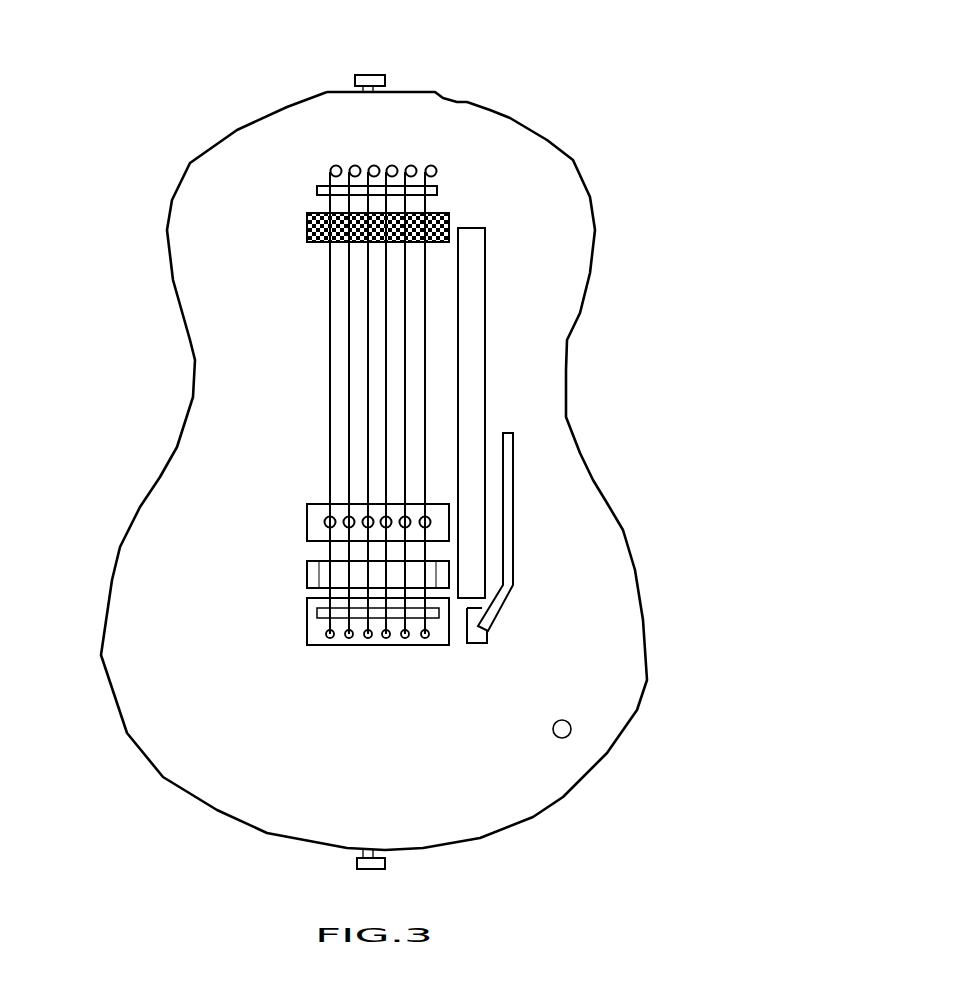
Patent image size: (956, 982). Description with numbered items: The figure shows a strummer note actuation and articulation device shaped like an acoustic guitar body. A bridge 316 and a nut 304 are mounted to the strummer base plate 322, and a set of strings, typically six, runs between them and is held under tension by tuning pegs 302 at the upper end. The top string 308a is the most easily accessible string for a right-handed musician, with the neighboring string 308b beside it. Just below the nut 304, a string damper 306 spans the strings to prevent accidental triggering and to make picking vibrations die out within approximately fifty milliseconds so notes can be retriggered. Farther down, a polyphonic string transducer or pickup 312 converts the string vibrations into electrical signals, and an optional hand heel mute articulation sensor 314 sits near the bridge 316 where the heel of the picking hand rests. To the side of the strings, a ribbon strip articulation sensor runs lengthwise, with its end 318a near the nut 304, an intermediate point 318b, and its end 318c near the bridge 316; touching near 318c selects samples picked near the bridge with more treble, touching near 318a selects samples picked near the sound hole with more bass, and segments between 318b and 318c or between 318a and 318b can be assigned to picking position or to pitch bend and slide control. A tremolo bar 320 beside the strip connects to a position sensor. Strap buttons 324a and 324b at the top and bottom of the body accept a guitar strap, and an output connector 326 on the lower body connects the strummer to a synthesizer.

The tuning pegs 302 is at (330, 166).
The nut 304 is at (315, 187).
The string damper 306 is at (307, 223).
The top string 308a is at (328, 265).
The string 308b is at (347, 290).
The polyphonic string transducer or pickup 312 is at (308, 505).
The hand heel mute articulation sensor 314 is at (307, 570).
The bridge 316 is at (307, 610).
The ribbon strip end near the nut 318a is at (485, 235).
The ribbon strip intermediate point 318b is at (485, 302).
The ribbon strip end near the bridge 318c is at (487, 590).
The tremolo bar 320 is at (513, 443).
The strummer base plate 322 is at (557, 495).
The strap button 324a is at (387, 75).
The strap button 324b is at (386, 866).
The output connector 326 is at (571, 727).